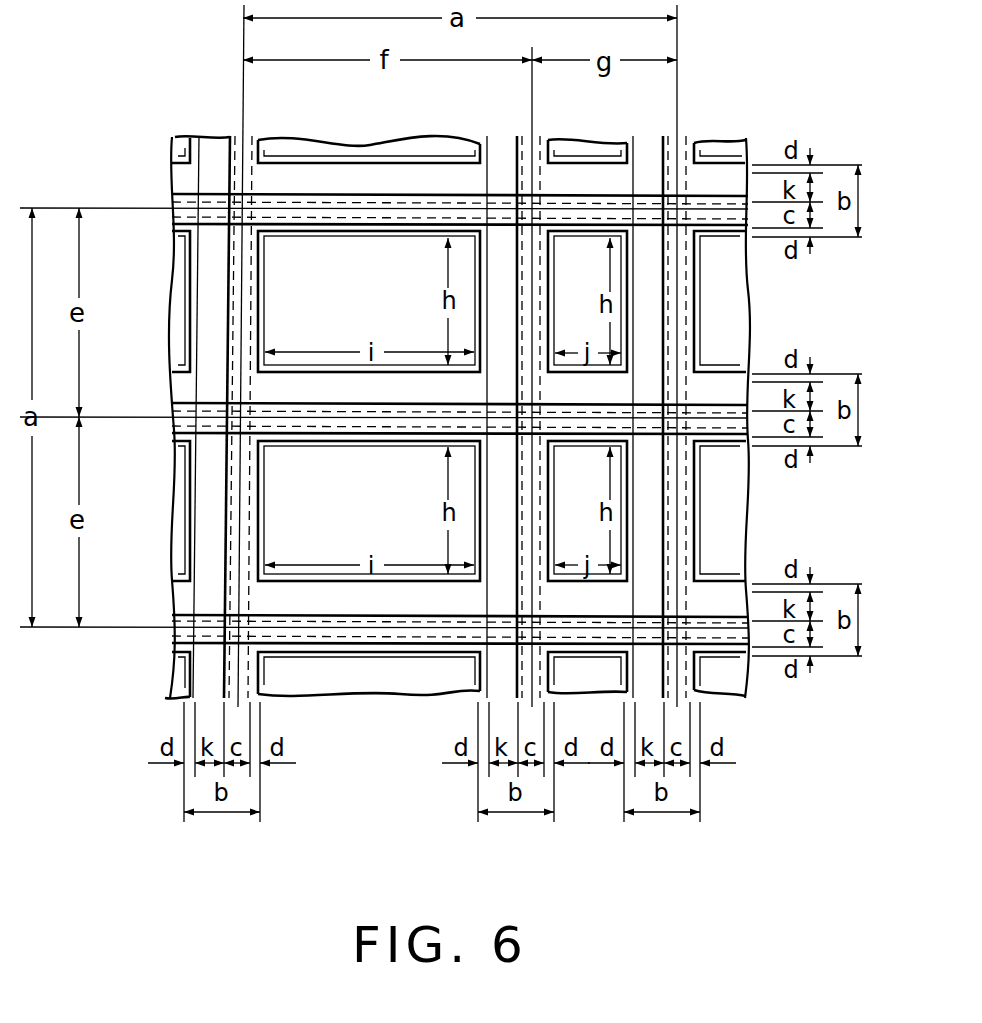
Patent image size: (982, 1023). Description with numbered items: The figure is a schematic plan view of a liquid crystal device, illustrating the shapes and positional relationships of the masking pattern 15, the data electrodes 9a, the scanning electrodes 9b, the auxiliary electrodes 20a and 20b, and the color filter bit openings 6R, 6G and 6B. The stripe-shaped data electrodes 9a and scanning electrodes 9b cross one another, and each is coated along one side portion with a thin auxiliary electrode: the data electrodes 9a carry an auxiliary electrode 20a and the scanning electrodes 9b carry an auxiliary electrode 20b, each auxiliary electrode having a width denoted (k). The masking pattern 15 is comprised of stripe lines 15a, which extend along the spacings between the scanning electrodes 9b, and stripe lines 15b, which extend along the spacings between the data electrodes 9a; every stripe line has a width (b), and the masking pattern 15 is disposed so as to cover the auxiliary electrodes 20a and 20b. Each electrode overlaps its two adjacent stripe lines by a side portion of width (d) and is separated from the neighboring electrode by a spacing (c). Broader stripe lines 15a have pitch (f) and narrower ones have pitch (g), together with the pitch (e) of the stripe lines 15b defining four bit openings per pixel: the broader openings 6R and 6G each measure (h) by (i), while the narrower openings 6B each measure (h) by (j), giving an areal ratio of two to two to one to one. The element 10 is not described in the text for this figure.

The masking pattern 15 is at (97, 67).
The stripe lines 15a is at (183, 140).
The stripe lines 15b is at (177, 142).
The data electrodes 9a is at (172, 210).
The scanning electrodes 9b is at (249, 135).
The auxiliary electrode 20a is at (172, 366).
The auxiliary electrode 20b is at (478, 140).
The substrate / display panel 10 is at (712, 486).
The bit opening (green color filter) 6G is at (390, 287).
The bit opening (blue color filter) 6B is at (566, 287).
The bit opening (red color filter) 6R is at (390, 505).